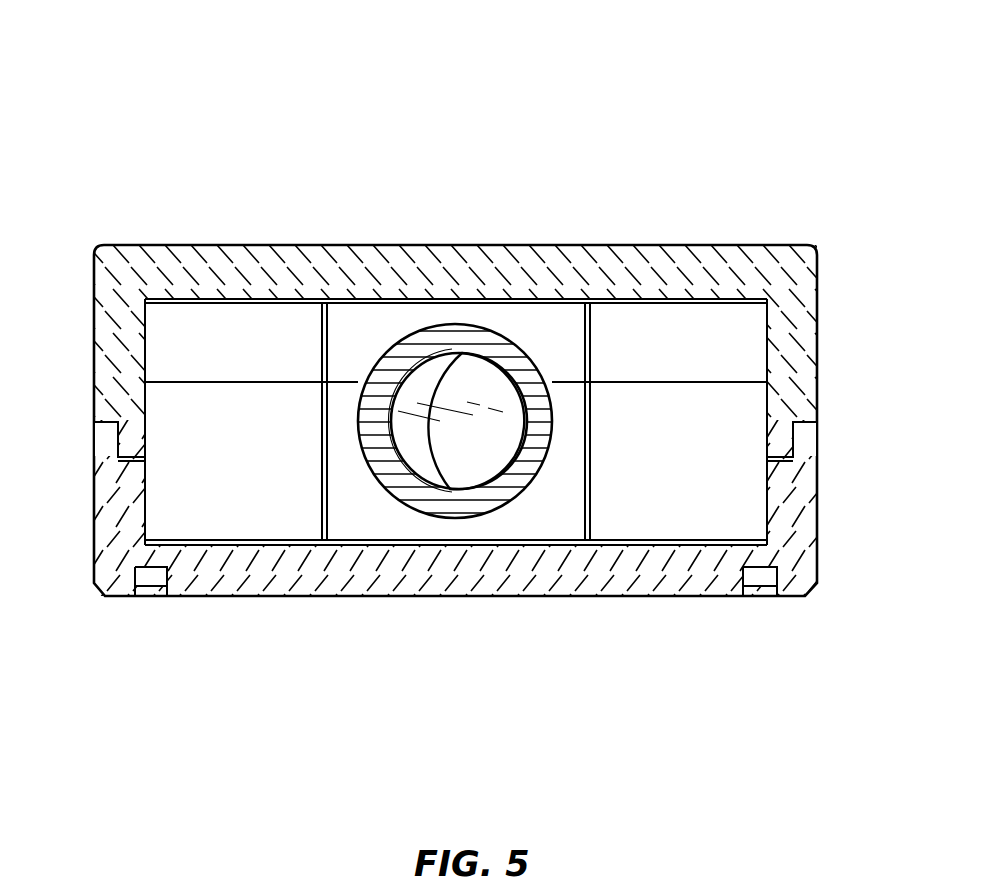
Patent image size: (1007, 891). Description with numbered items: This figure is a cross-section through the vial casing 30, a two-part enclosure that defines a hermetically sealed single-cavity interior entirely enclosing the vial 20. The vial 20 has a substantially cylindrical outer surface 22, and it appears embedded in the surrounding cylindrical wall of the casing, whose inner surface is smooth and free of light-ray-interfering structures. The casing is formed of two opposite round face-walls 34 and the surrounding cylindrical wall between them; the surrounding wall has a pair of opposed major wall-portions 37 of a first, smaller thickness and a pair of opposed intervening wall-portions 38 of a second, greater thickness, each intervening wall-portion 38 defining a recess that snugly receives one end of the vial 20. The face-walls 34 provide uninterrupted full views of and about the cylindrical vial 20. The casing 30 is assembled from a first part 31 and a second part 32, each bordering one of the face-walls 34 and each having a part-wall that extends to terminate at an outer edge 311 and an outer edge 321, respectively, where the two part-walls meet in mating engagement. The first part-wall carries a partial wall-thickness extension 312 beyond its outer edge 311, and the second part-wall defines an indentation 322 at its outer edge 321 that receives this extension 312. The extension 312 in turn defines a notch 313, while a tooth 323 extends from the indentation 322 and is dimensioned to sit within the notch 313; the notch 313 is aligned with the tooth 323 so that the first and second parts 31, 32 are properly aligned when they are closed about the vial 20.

The vial casing 30 is at (455, 301).
The first part 31 is at (456, 604).
The second part 32 is at (456, 240).
The round face-walls 34 is at (455, 432).
The major wall-portions 37 is at (251, 489).
The intervening wall-portions 38 is at (544, 489).
The outer edge 311 is at (81, 412).
The outer edge 321 is at (81, 449).
The tooth 323 is at (827, 396).
The notch 313 is at (828, 488).
The indentation 322 is at (228, 271).
The partial wall-thickness extension 312 is at (233, 267).
The cylindrical outer surface 22 is at (420, 346).
The vial 20 is at (458, 325).